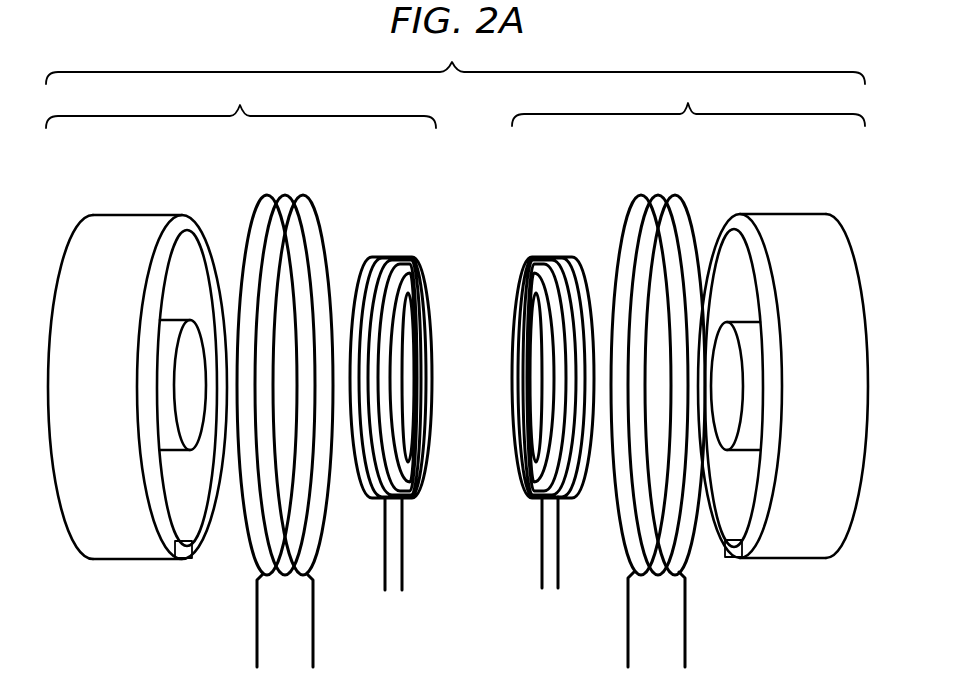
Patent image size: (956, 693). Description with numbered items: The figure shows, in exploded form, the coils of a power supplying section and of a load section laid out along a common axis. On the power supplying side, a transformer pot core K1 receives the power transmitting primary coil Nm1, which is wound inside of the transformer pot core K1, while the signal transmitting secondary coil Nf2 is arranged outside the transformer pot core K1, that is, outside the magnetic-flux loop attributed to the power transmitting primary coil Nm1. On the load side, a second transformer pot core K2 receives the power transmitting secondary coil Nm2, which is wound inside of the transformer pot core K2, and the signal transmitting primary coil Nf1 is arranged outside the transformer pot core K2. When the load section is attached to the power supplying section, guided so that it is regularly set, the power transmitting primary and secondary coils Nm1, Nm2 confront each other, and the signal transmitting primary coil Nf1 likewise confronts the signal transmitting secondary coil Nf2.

The transformer pot core K1 is at (117, 214).
The transformer pot core K2 is at (800, 213).
The signal transmitting primary coil Nf1 is at (675, 193).
The signal transmitting secondary coil Nf2 is at (267, 195).
The power transmitting primary coil Nm1 is at (390, 257).
The power transmitting secondary coil Nm2 is at (552, 257).